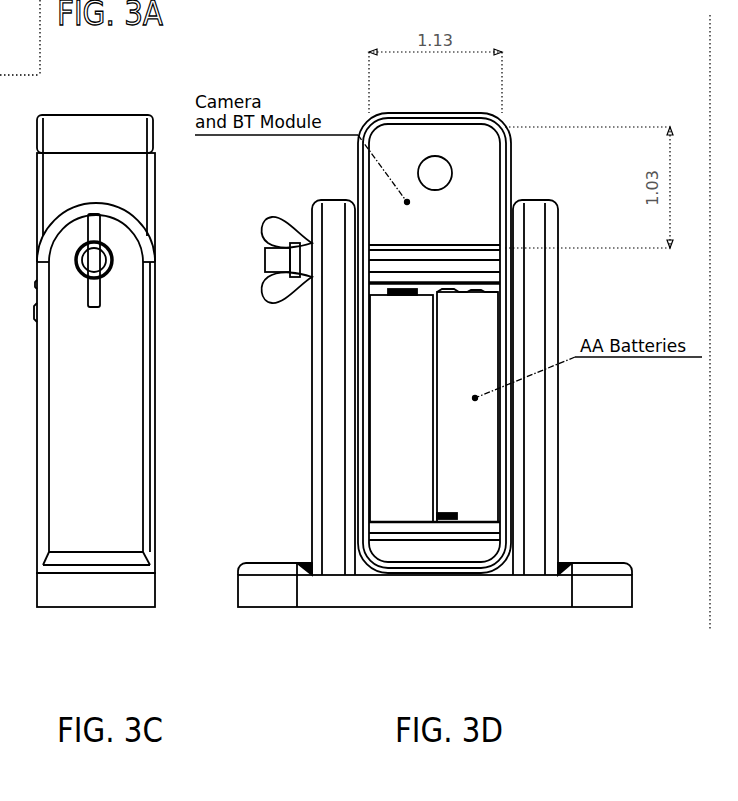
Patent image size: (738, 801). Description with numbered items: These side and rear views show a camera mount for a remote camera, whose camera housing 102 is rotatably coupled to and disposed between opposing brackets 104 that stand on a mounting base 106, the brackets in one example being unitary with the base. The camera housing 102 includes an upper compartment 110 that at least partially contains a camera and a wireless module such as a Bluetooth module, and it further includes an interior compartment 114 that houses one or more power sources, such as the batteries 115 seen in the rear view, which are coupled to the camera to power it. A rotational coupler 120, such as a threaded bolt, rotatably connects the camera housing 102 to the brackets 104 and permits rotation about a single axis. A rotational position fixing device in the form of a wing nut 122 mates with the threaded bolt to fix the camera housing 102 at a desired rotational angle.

In FIG. 3C, the upper compartment 110 is at (133, 162).
In FIG. 3D, the upper compartment 110 is at (497, 143).
In FIG. 3C, the wing nut 122 is at (100, 234).
In FIG. 3C, the brackets 104 is at (115, 390).
In FIG. 3D, the camera housing 102 is at (312, 262).
In FIG. 3D, the rotational coupler 120 is at (566, 250).
In FIG. 3D, the interior compartment 114 is at (466, 280).
In FIG. 3D, the batteries 115 is at (486, 462).
In FIG. 3D, the mounting base 106 is at (387, 607).